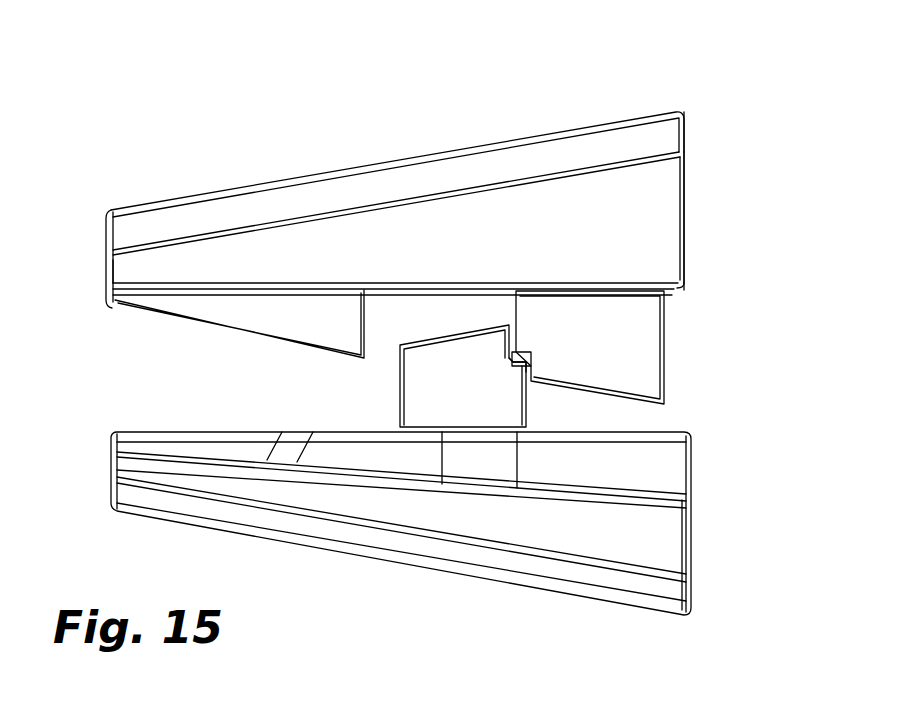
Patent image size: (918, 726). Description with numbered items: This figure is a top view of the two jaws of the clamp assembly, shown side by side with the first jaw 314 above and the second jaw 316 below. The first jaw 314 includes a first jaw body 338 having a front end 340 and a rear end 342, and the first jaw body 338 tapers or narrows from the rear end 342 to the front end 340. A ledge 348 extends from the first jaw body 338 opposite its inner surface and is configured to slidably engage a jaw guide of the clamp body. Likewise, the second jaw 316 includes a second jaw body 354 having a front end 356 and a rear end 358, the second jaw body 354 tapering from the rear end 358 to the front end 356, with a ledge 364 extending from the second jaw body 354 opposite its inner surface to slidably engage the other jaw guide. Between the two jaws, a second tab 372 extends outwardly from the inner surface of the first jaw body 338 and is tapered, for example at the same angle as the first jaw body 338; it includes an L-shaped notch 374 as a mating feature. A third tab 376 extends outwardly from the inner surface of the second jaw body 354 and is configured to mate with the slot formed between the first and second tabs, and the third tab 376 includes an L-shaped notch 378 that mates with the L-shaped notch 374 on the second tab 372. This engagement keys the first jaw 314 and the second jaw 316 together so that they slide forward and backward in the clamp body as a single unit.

The first jaw 314 is at (706, 110).
The second jaw 316 is at (722, 494).
The first jaw body 338 is at (550, 213).
The front end 340 is at (105, 270).
The rear end 342 is at (687, 230).
The ledge 348 is at (316, 188).
The second jaw body 354 is at (505, 515).
The front end 356 is at (108, 457).
The rear end 358 is at (688, 583).
The ledge 364 is at (355, 552).
The second tab 372 is at (640, 340).
The L-shaped notch 374 is at (523, 352).
The third tab 376 is at (428, 368).
The L-shaped notch 378 is at (507, 363).